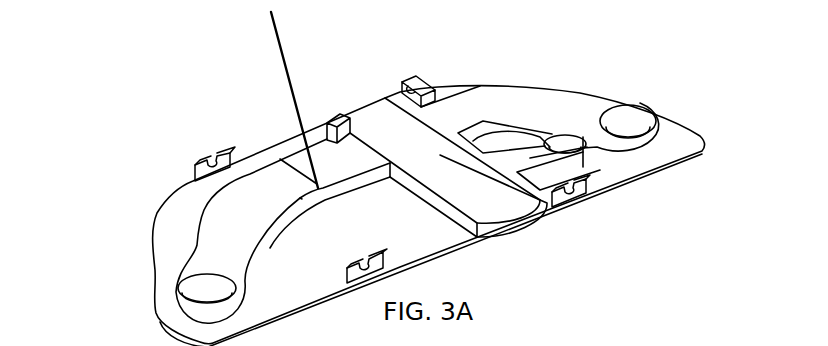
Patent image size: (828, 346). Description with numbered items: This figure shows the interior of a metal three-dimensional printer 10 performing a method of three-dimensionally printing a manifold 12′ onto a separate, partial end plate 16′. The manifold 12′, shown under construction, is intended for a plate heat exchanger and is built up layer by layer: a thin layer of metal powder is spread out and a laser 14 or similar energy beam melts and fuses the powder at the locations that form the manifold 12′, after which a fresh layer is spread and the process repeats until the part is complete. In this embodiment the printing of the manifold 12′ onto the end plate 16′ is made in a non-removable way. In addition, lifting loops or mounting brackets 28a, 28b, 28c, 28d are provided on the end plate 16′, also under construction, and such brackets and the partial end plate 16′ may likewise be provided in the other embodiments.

The metal 3D printer 10 is at (121, 189).
The manifold 12′ is at (258, 136).
The laser 14 is at (292, 86).
The partial end plate 16′ is at (350, 225).
The lifting loop/mounting bracket 28a is at (377, 253).
The lifting loop/mounting bracket 28b is at (581, 183).
The lifting loop/mounting bracket 28c is at (197, 167).
The lifting loop/mounting bracket 28d is at (413, 83).